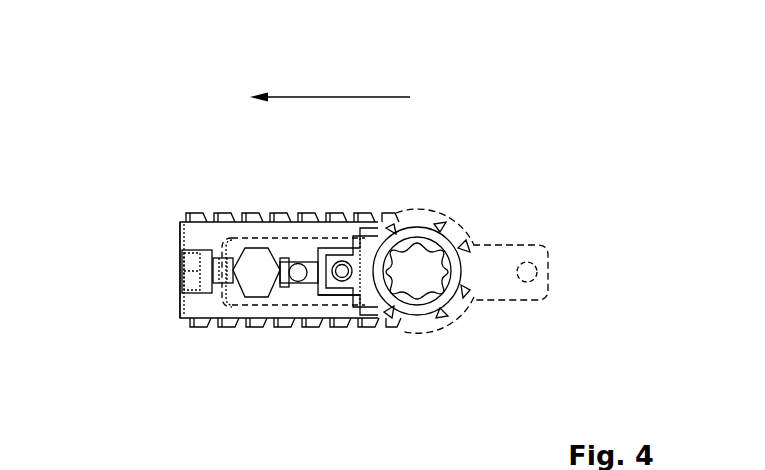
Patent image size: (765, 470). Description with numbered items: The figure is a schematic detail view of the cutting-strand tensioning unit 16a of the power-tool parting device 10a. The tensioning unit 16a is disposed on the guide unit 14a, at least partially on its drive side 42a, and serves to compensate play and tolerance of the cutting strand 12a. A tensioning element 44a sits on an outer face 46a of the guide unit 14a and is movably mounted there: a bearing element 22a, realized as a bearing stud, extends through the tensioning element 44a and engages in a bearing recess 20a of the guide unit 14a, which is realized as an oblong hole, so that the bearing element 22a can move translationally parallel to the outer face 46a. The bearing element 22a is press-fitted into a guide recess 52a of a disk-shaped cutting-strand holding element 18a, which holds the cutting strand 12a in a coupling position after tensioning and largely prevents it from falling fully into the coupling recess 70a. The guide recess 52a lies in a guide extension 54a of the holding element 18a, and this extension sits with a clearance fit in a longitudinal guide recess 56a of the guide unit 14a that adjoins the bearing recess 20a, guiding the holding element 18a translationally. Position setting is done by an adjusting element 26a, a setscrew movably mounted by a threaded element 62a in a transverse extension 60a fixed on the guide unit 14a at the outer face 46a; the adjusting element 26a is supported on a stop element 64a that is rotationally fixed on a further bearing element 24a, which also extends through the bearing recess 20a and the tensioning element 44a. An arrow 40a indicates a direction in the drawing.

The power-tool parting device 10a is at (507, 139).
The cutting strand 12a is at (228, 222).
The guide unit 14a is at (200, 235).
The cutting-strand tensioning unit 16a is at (445, 389).
The cutting-strand holding element 18a is at (466, 297).
The bearing recess 20a is at (285, 262).
The bearing element 22a is at (355, 256).
The further bearing element 24a is at (255, 270).
The adjusting element 26a is at (221, 262).
The actuation direction 40a is at (338, 97).
The drive side 42a is at (564, 319).
The tensioning element 44a is at (502, 258).
The outer face 46a is at (193, 302).
The guide recess 52a is at (342, 296).
The guide extension 54a is at (393, 226).
The longitudinal guide recess 56a is at (339, 262).
The transverse extension 60a is at (192, 275).
The threaded element 62a is at (207, 257).
The stop element 64a is at (250, 300).
The coupling recess 70a is at (386, 278).